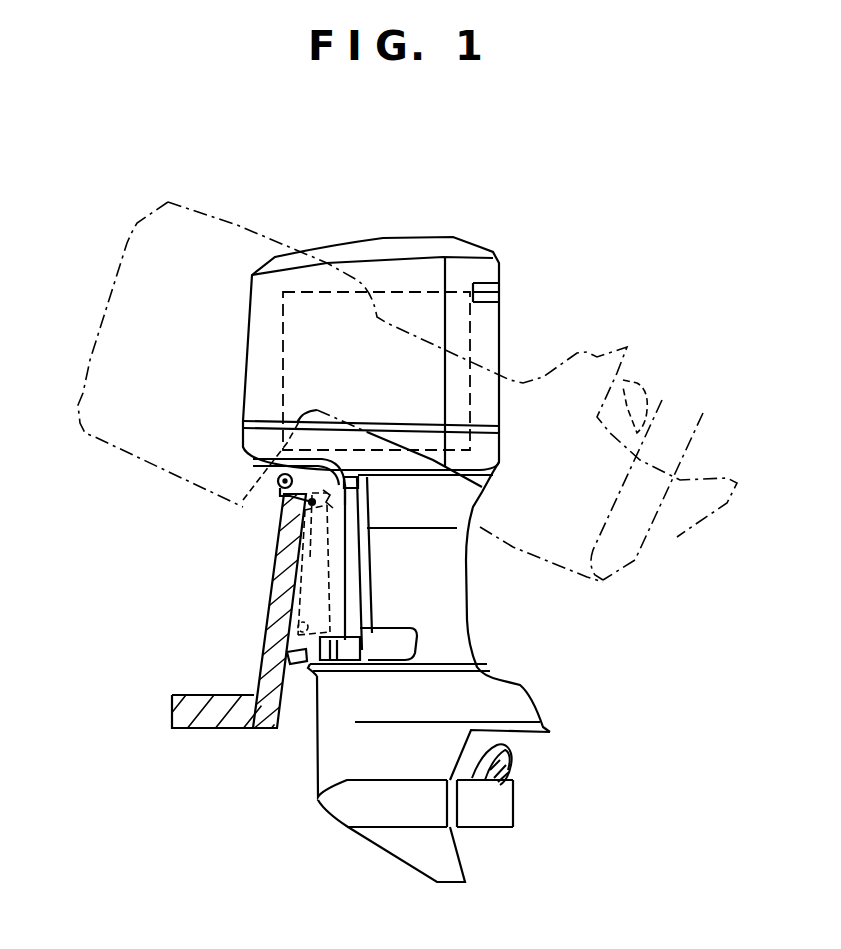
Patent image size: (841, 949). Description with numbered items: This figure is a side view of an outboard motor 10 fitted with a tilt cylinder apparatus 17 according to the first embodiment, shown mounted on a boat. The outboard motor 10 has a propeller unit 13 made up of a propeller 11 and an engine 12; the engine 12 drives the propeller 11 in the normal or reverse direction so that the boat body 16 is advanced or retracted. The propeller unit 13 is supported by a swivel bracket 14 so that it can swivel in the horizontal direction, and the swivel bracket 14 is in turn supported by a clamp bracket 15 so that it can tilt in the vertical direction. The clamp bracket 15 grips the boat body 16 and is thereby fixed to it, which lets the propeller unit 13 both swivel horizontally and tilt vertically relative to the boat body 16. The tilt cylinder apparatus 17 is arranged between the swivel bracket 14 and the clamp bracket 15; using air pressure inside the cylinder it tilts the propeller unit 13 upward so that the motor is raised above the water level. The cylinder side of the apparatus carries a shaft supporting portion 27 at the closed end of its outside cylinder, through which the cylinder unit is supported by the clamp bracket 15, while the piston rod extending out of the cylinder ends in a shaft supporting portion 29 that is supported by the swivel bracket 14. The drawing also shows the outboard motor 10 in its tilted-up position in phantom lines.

The outboard motor 10 is at (395, 524).
The propeller 11 is at (518, 753).
The engine 12 is at (470, 347).
The propeller unit 13 is at (417, 333).
The swivel bracket 14 is at (317, 572).
The clamp bracket 15 is at (300, 540).
The boat body 16 is at (183, 695).
The tilt cylinder apparatus 17 is at (310, 605).
The shaft supporting portion 27 is at (307, 623).
The shaft supporting portion 29 is at (273, 492).